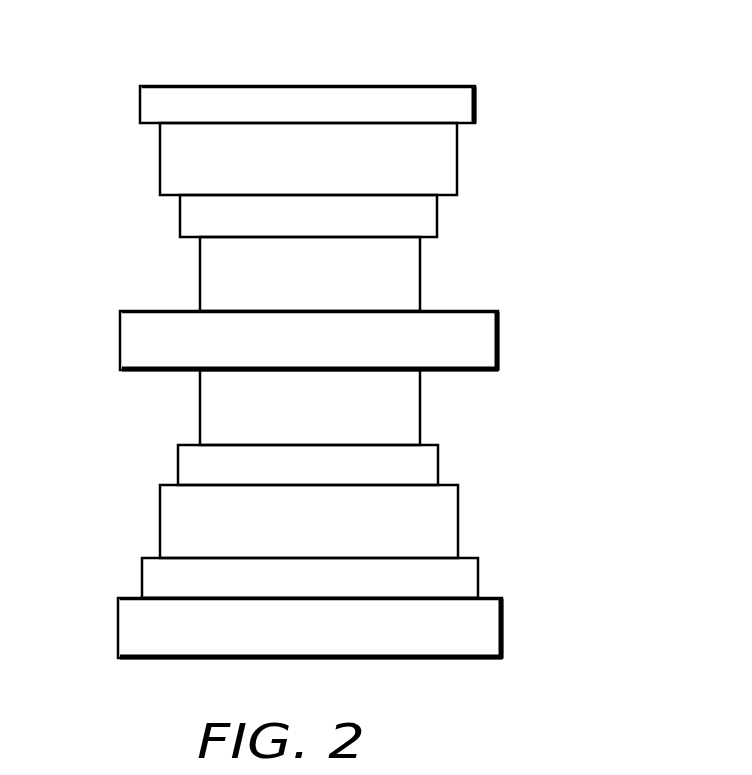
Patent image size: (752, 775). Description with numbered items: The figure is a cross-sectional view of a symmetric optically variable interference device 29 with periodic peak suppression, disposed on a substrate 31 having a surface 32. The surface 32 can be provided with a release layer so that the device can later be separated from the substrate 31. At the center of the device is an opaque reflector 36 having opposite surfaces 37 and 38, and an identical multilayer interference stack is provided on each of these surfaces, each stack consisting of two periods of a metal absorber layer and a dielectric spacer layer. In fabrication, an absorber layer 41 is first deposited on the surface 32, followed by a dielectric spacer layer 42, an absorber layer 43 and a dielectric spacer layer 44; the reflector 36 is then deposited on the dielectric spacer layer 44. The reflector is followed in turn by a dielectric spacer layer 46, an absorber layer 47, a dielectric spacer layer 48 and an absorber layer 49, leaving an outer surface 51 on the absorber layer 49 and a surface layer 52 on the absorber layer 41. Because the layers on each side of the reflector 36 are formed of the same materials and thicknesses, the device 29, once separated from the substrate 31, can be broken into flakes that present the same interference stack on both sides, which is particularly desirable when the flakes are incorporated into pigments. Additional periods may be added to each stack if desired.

The symmetric optically variable interference device 29 is at (518, 576).
The substrate 31 is at (470, 631).
The surface of the substrate 32 is at (490, 596).
The reflector 36 is at (134, 341).
The surface of the reflector 37 is at (148, 375).
The surface of the reflector 38 is at (140, 310).
The absorber layer 41 is at (158, 575).
The dielectric spacer layer 42 is at (178, 522).
The absorber layer 43 is at (195, 463).
The dielectric spacer layer 44 is at (214, 409).
The dielectric spacer layer 46 is at (210, 270).
The absorber layer 47 is at (188, 217).
The dielectric spacer layer 48 is at (170, 160).
The absorber layer 49 is at (148, 103).
The surface 51 is at (338, 85).
The surface layer 52 is at (178, 602).